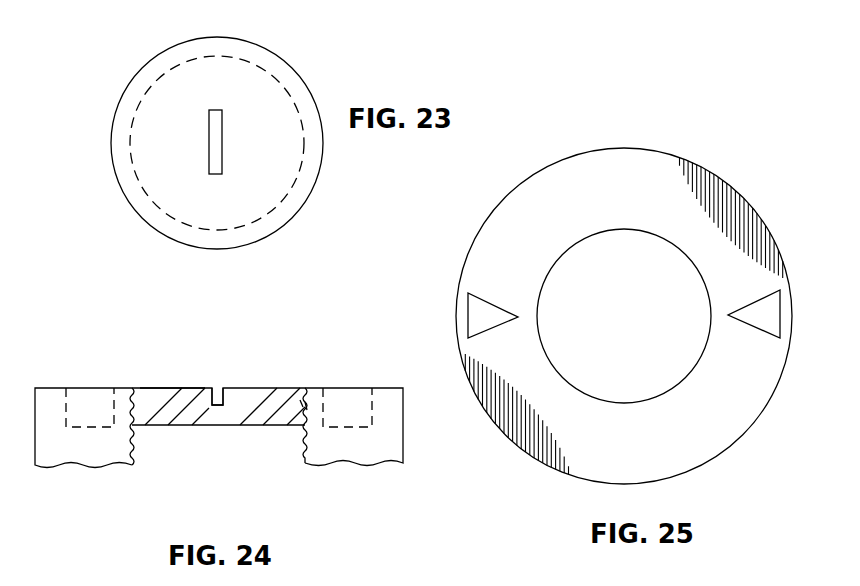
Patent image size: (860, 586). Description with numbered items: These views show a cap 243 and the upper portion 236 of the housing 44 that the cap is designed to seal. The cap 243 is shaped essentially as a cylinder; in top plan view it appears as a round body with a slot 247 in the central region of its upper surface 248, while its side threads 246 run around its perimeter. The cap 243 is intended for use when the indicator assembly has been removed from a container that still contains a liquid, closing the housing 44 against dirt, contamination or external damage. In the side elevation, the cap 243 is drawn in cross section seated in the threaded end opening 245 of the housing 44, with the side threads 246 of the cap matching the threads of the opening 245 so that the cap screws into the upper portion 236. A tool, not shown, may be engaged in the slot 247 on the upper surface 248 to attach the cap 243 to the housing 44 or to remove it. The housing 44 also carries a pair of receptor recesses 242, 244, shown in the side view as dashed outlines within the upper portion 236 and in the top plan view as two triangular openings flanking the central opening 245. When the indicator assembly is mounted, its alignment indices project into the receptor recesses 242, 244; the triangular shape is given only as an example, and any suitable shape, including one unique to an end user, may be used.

In FIG. 24, the housing 44 is at (90, 462).
In FIG. 25, the housing 44 is at (480, 230).
In FIG. 24, the upper portion of the housing 236 is at (57, 388).
In FIG. 24, the receptor recess 242 is at (70, 410).
In FIG. 25, the receptor recess 242 is at (468, 320).
In FIG. 23, the cap 243 is at (297, 210).
In FIG. 24, the cap 243 is at (182, 427).
In FIG. 24, the receptor recess 244 is at (370, 407).
In FIG. 25, the receptor recess 244 is at (757, 328).
In FIG. 24, the threaded end opening 245 is at (303, 407).
In FIG. 25, the threaded end opening 245 is at (710, 313).
In FIG. 23, the side threads 246 is at (257, 63).
In FIG. 24, the side threads 246 is at (305, 407).
In FIG. 23, the slot 247 is at (209, 137).
In FIG. 24, the slot 247 is at (217, 403).
In FIG. 24, the upper surface 248 is at (172, 388).